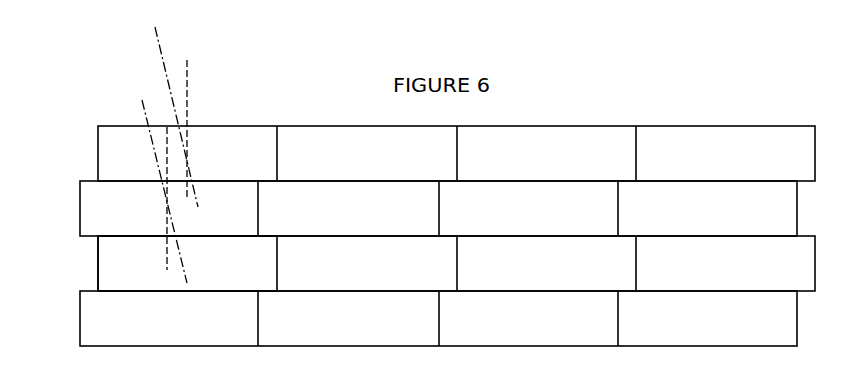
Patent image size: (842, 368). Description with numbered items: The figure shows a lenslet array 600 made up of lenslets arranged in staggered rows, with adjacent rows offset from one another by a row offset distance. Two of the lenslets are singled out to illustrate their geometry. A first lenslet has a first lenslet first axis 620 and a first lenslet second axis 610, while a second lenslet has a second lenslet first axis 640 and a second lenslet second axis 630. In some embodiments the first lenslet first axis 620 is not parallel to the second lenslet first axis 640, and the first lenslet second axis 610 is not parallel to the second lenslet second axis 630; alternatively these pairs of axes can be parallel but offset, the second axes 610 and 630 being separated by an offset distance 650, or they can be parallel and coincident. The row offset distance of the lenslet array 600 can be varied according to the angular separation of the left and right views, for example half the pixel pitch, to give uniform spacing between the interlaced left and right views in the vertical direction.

The lenslet array 600 is at (619, 104).
The first lenslet second axis 610 is at (208, 126).
The first lenslet first axis 620 is at (160, 108).
The second lenslet second axis 630 is at (187, 263).
The second lenslet first axis 640 is at (142, 182).
The offset distance 650 is at (228, 153).